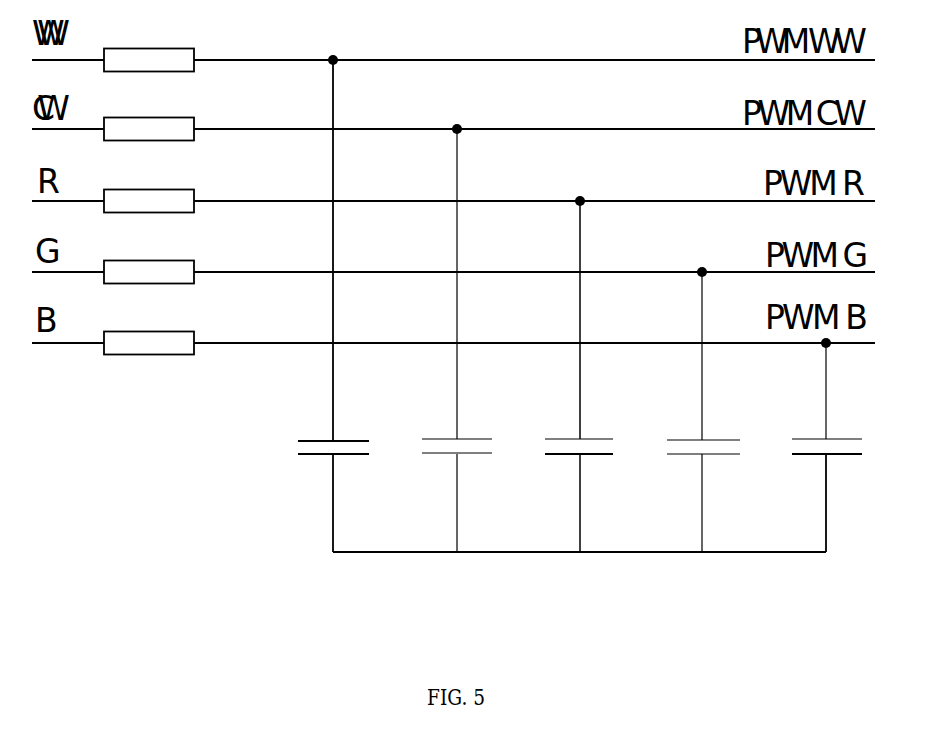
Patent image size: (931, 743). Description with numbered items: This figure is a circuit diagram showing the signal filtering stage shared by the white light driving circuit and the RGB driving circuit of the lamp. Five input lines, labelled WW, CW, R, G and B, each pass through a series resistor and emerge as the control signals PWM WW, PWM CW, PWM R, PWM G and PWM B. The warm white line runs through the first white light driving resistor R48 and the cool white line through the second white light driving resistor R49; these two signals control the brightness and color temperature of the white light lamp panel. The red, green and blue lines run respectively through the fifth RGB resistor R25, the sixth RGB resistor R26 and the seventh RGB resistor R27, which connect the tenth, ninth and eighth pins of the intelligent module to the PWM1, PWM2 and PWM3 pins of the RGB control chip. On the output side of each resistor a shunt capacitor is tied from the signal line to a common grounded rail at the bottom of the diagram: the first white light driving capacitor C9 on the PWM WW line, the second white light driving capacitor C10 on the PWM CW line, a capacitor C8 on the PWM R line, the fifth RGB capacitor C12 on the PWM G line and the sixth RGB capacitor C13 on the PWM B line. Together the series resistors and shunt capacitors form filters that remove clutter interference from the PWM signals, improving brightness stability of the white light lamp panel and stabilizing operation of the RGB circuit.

The first white light driving resistor R48 is at (182, 42).
The second white light driving resistor R49 is at (182, 114).
The fifth RGB resistor R25 is at (182, 187).
The sixth RGB resistor R26 is at (182, 257).
The seventh RGB resistor R27 is at (182, 326).
The first white light driving capacitor C9 is at (340, 303).
The second white light driving capacitor C10 is at (473, 338).
The capacitor C8 (PWM R filter) C8 is at (586, 374).
The fifth RGB capacitor C12 is at (720, 409).
The sixth RGB capacitor C13 is at (843, 445).